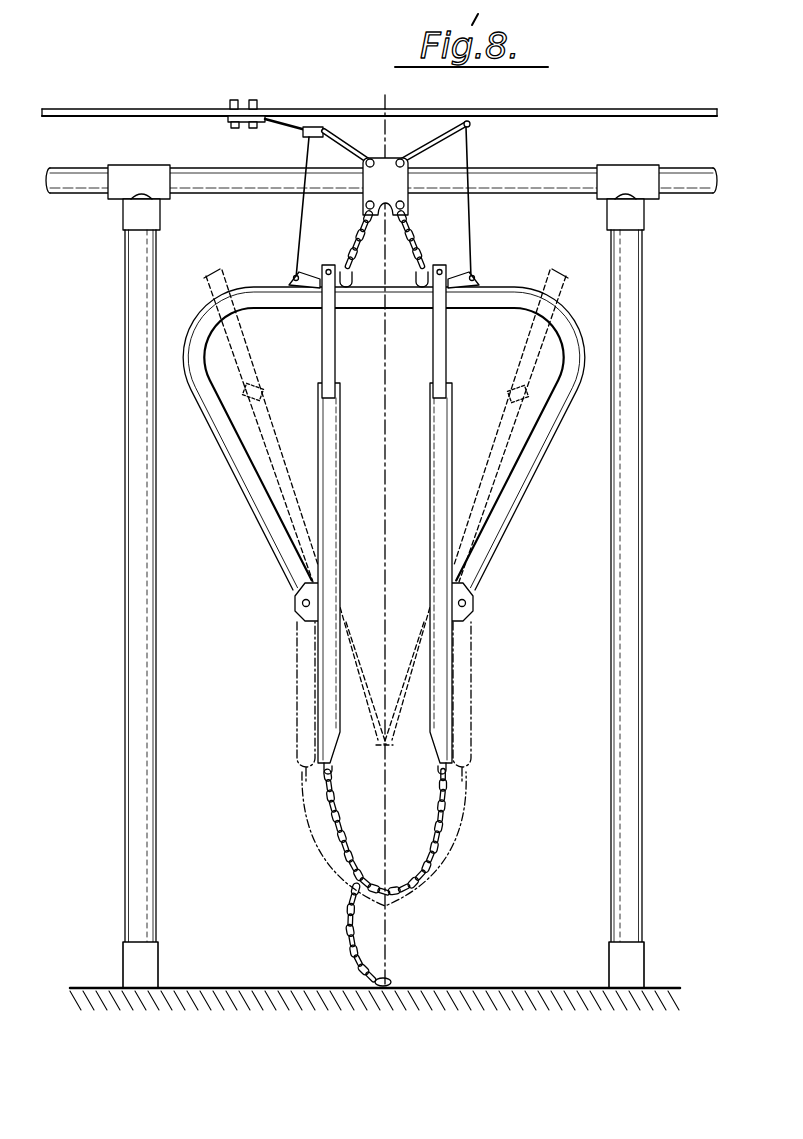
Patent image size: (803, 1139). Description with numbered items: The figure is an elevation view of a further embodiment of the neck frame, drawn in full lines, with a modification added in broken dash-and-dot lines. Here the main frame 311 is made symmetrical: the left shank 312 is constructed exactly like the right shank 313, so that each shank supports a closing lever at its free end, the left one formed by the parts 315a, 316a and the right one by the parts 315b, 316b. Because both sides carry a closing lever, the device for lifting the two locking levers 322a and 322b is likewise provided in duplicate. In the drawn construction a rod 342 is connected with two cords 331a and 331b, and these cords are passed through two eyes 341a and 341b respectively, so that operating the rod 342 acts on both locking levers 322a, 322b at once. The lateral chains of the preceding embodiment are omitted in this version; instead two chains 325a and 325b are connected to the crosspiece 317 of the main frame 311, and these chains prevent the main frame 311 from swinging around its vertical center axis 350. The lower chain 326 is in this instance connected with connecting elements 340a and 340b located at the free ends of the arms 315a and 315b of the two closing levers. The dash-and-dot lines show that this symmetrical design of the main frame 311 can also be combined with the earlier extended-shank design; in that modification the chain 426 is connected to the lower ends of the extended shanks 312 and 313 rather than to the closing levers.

The main frame 311 is at (379, 525).
The left shank 312 is at (228, 440).
The right shank 313 is at (527, 470).
The arm of closing lever 315a is at (327, 657).
The arm of closing lever 315b is at (441, 658).
The closing lever part 316a is at (327, 462).
The closing lever part 316b is at (437, 459).
The crosspiece 317 is at (388, 300).
The locking lever 322a is at (298, 273).
The locking lever 322b is at (460, 278).
The chain 325a is at (352, 232).
The chain 325b is at (412, 232).
The lower chain 326 is at (413, 882).
The cord 331a is at (308, 153).
The cord 331b is at (470, 153).
The connecting element 340a is at (320, 766).
The connecting element 340b is at (447, 768).
The eye 341a is at (303, 128).
The eye 341b is at (470, 126).
The rod 342 is at (350, 118).
The vertical center axis 350 is at (385, 578).
The chain 426 is at (455, 838).